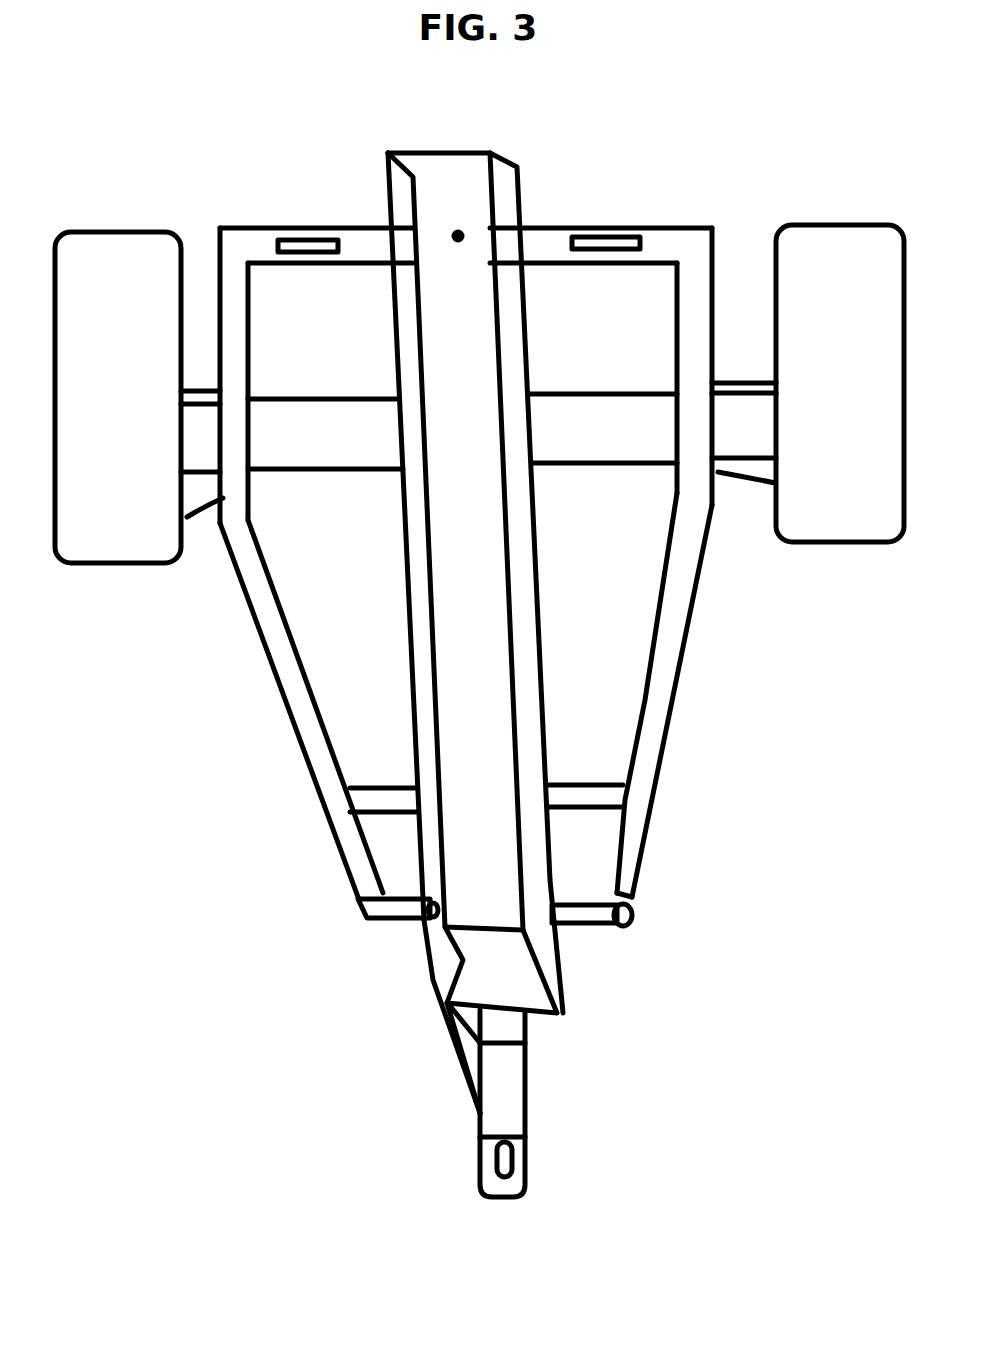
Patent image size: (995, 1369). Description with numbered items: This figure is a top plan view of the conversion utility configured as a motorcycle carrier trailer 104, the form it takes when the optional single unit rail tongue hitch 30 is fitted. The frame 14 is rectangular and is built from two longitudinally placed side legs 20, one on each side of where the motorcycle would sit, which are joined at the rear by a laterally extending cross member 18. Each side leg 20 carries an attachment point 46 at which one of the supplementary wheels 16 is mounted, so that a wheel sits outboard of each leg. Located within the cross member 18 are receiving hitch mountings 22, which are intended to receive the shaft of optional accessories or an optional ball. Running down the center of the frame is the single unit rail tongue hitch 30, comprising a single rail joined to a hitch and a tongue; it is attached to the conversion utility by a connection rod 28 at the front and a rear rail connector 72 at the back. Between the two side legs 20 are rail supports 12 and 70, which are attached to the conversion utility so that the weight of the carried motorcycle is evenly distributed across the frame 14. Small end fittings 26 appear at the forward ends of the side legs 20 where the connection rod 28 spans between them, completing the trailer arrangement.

The rail support 12 is at (486, 521).
The frame 14 is at (596, 218).
The supplementary wheels 16 is at (116, 270).
The cross member 18 is at (345, 228).
The side legs 20 is at (653, 732).
The receiving hitch mountings 22 is at (303, 250).
The end caps with pins 26 is at (358, 917).
The connection rod 28 is at (395, 927).
The single unit rail tongue hitch 30 is at (502, 1088).
The attachment point 46 is at (203, 495).
The rail support 70 is at (547, 427).
The rear rail connector 72 is at (458, 222).
The motorcycle carrier trailer 104 is at (247, 227).